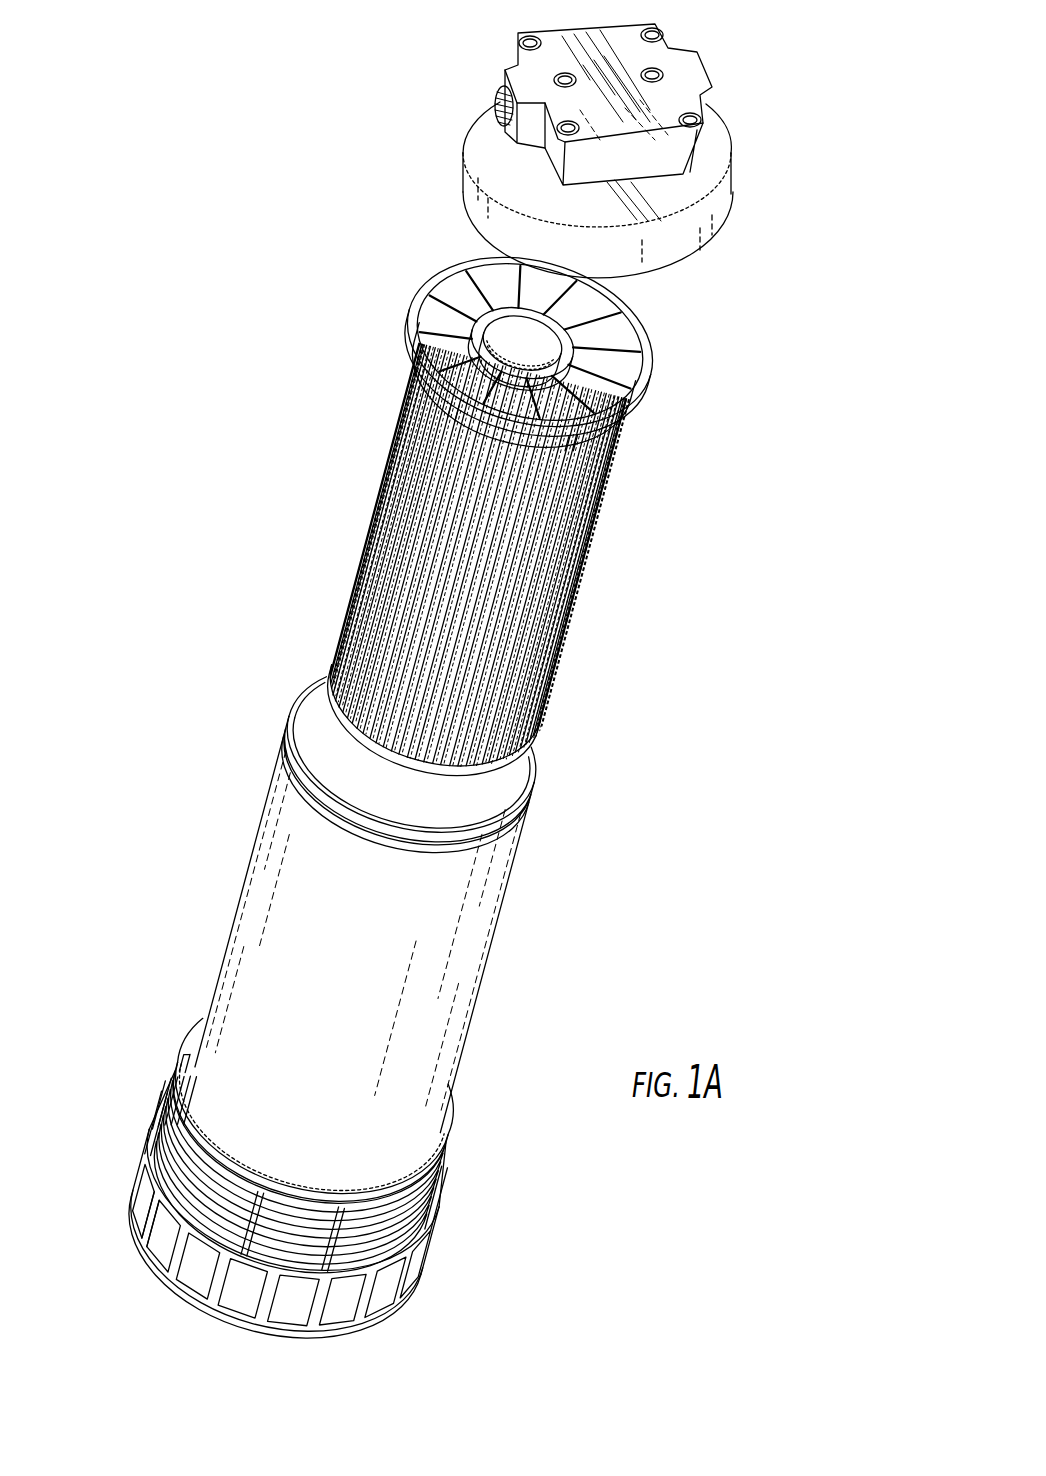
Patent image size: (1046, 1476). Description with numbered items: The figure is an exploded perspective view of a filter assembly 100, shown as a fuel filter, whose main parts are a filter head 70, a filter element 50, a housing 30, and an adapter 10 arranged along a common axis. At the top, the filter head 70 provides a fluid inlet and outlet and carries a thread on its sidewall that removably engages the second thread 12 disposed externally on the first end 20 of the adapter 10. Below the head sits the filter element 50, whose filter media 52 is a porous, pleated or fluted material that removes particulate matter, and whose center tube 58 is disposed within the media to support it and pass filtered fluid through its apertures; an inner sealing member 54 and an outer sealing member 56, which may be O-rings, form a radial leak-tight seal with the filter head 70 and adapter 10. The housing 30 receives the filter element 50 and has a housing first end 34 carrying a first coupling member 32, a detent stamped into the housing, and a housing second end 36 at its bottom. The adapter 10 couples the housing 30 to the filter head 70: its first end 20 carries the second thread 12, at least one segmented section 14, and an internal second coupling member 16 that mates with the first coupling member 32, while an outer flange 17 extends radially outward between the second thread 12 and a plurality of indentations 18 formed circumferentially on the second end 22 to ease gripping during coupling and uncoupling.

The filter assembly 100 is at (178, 318).
The filter head 70 is at (748, 157).
The center tube 58 is at (517, 352).
The inner sealing member 54 is at (578, 345).
The outer sealing member 56 is at (630, 396).
The filter media 52 is at (355, 567).
The filter element 50 is at (486, 515).
The housing first end 34 is at (284, 735).
The first coupling member 32 is at (500, 830).
The housing 30 is at (365, 986).
The housing second end 36 is at (440, 1152).
The first end 20 is at (440, 1185).
The second coupling member 16 is at (186, 1084).
The second thread 12 is at (158, 1131).
The segmented section 14 is at (176, 1150).
The outer flange 17 is at (159, 1192).
The indentations 18 is at (176, 1247).
The second end 22 is at (378, 1318).
The adapter 10 is at (301, 1199).